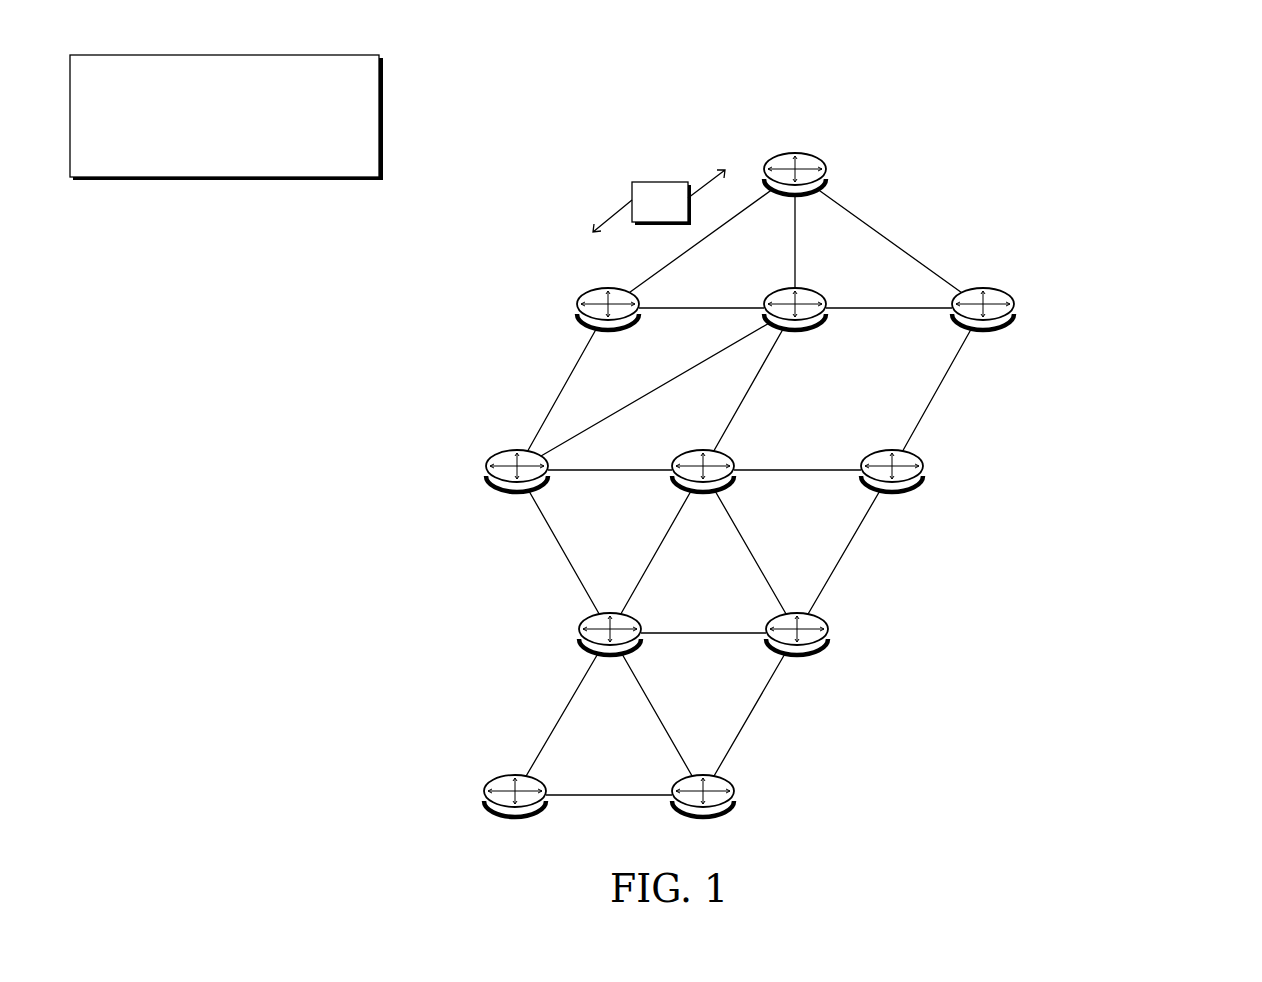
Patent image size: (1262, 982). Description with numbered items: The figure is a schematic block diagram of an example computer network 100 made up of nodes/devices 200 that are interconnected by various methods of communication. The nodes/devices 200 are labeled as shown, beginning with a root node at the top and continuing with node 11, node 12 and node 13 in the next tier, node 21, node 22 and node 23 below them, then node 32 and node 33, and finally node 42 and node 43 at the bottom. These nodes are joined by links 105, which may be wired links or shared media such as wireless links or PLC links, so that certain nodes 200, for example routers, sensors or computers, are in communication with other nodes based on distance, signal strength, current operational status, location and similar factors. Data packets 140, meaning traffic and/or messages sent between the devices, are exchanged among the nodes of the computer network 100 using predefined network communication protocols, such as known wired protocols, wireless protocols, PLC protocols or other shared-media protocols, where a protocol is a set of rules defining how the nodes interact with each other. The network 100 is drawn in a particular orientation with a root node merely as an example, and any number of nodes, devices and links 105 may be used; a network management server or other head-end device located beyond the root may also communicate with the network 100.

The computer network 100 is at (1162, 116).
The links 105 is at (105, 86).
The nodes/devices 200 is at (564, 483).
The data packets 140 is at (677, 213).
The node 11 is at (608, 327).
The node 12 is at (795, 327).
The node 13 is at (983, 327).
The node 21 is at (517, 488).
The node 22 is at (703, 488).
The node 23 is at (892, 488).
The node 32 is at (610, 651).
The node 33 is at (797, 651).
The node 42 is at (515, 813).
The node 43 is at (703, 813).